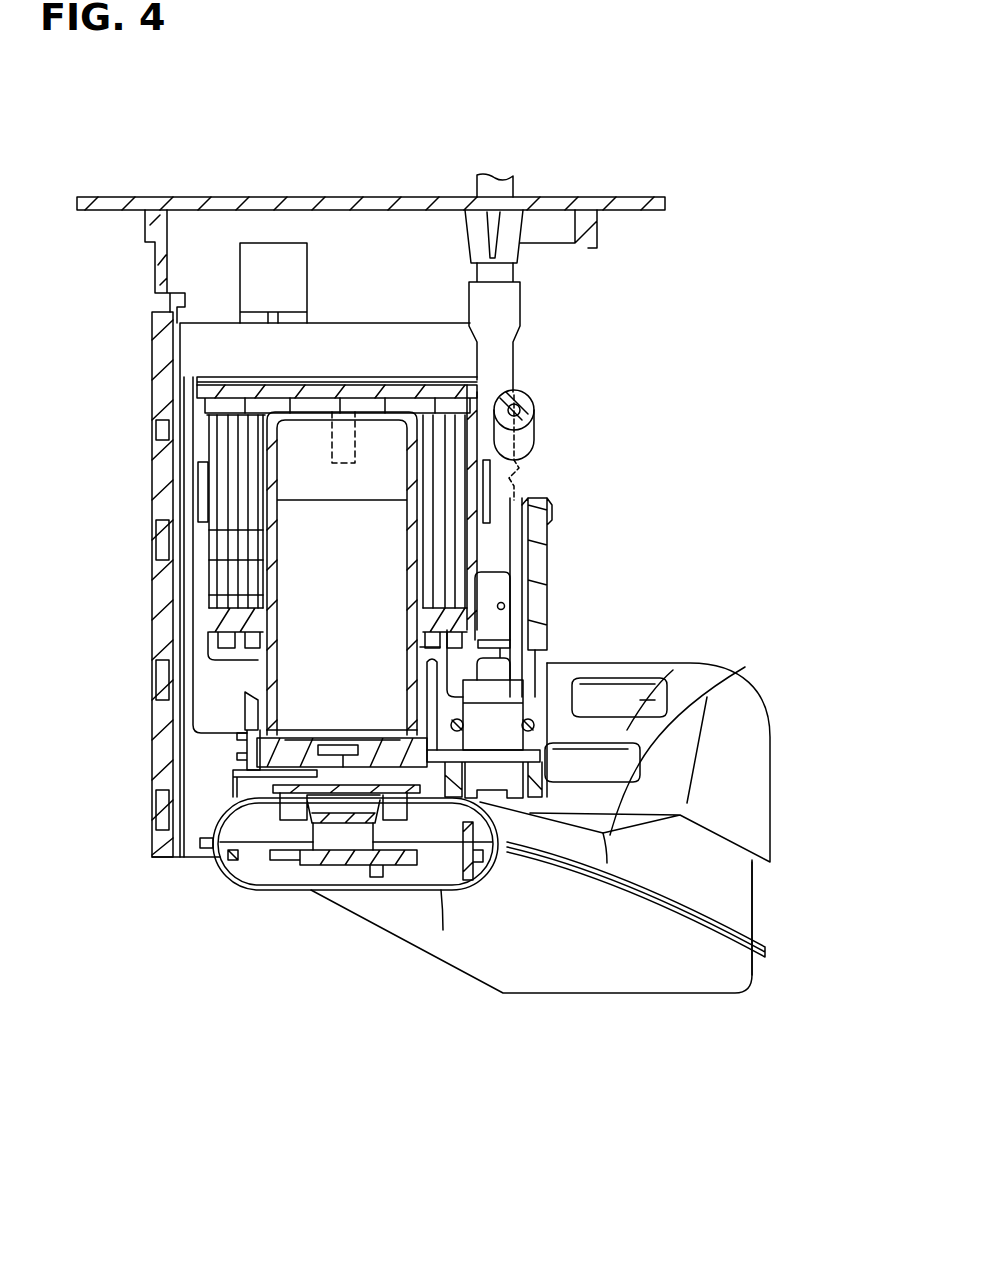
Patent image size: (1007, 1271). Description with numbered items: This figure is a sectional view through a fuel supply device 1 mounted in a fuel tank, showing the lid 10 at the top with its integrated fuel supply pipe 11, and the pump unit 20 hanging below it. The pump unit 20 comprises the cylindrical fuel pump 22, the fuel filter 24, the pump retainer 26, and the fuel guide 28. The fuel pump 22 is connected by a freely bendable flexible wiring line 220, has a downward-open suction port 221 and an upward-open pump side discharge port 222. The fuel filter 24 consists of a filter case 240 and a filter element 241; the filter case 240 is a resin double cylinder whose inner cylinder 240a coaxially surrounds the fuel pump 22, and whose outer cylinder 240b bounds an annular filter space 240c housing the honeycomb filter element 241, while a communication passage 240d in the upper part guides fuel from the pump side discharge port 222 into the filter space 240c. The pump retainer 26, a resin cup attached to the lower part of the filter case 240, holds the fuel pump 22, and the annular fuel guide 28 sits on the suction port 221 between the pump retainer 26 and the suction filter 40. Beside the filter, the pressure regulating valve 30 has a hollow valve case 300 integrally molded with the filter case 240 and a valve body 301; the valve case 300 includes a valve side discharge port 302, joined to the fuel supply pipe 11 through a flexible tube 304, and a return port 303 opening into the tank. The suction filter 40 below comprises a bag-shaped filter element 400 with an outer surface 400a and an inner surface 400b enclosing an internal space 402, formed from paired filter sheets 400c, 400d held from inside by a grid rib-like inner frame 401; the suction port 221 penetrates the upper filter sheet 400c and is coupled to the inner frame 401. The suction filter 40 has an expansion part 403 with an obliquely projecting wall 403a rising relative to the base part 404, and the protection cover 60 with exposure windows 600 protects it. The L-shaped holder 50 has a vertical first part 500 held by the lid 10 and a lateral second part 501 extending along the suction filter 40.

The fuel supply device 1 is at (75, 262).
The lid 10 is at (630, 212).
The fuel supply pipe 11 is at (513, 190).
The pump unit 20 is at (495, 390).
The fuel pump 22 is at (307, 668).
The fuel filter 24 is at (470, 560).
The pump retainer 26 is at (247, 700).
The fuel guide 28 is at (240, 790).
The pressure regulating valve 30 is at (548, 650).
The suction filter 40 is at (755, 897).
The L-shaped holder 50 is at (155, 862).
The protection cover 60 is at (772, 800).
The flexible wiring line 220 is at (387, 378).
The suction port 221 is at (317, 830).
The pump side discharge port 222 is at (332, 451).
The filter case 240 is at (63, 553).
The inner cylinder 240a is at (250, 620).
The outer cylinder 240b is at (215, 590).
The filter space 240c is at (215, 555).
The communication passage 240d is at (162, 418).
The filter element 241 is at (235, 485).
The valve case 300 is at (545, 630).
The valve body 301 is at (507, 708).
The valve side discharge port 302 is at (530, 525).
The return port 303 is at (504, 606).
The flexible tube 304 is at (534, 410).
The filter element 400 is at (780, 1025).
The outer surface 400a is at (380, 876).
The inner surface 400b is at (342, 878).
The filter sheet 400c is at (700, 898).
The filter sheet 400d is at (687, 937).
The inner frame 401 is at (402, 862).
The internal space 402 is at (253, 860).
The expansion part 403 is at (703, 773).
The projecting wall 403a is at (638, 697).
The base part 404 is at (443, 887).
The first part 500 is at (165, 512).
The second part 501 is at (160, 790).
The exposure windows 600 is at (690, 712).